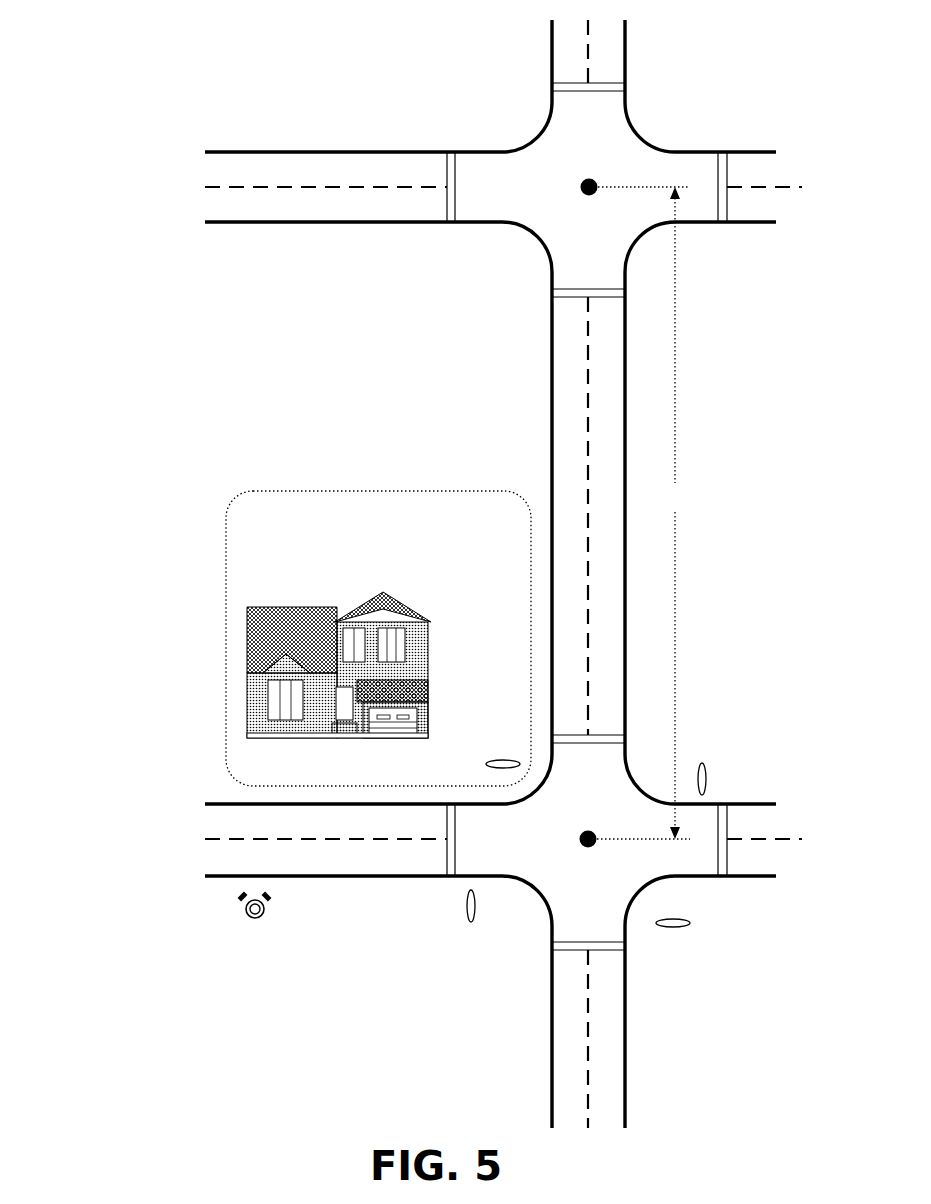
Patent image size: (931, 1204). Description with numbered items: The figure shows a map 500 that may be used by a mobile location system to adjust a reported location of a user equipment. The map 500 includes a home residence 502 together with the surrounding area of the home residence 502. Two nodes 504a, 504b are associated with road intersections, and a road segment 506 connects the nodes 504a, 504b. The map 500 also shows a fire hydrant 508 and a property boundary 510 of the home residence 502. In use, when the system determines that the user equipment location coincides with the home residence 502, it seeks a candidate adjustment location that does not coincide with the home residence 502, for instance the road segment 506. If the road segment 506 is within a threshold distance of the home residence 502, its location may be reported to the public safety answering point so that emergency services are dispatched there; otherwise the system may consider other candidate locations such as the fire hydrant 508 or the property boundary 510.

The map 500 is at (116, 85).
The home residence 502 is at (383, 592).
The node 504a is at (580, 188).
The node 504b is at (579, 839).
The road segment 506 is at (679, 513).
The fire hydrant 508 is at (245, 917).
The property boundary 510 is at (225, 541).